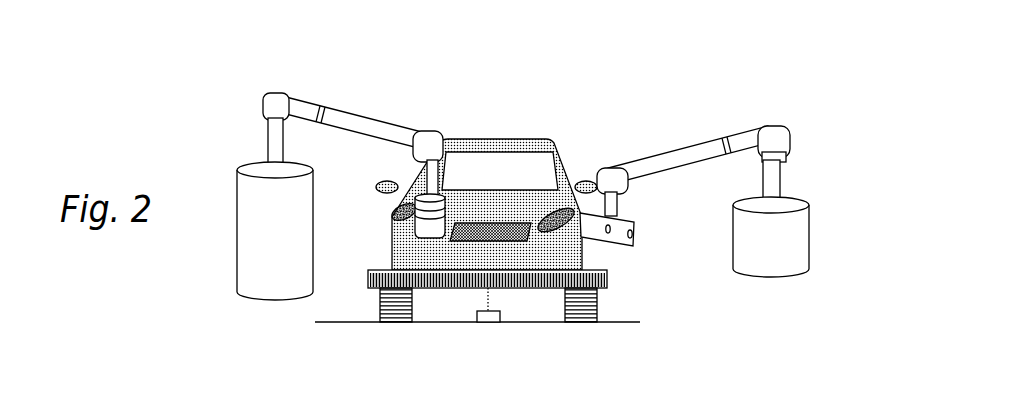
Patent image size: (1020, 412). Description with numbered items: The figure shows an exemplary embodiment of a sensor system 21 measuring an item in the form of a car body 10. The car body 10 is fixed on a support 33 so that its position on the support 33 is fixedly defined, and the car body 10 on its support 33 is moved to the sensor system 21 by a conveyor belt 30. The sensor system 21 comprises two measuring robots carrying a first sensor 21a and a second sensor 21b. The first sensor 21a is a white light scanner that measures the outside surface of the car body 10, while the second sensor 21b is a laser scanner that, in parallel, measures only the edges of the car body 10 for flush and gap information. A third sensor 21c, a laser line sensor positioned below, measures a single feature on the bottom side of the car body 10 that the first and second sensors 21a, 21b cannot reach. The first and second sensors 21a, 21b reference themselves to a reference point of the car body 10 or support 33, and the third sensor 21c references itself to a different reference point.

The car body 10 is at (486, 180).
The sensor system 21 is at (523, 168).
The first sensor 21a is at (652, 265).
The second sensor 21b is at (372, 147).
The third sensor 21c is at (543, 331).
The conveyor belt 30 is at (553, 322).
The support 33 is at (487, 317).